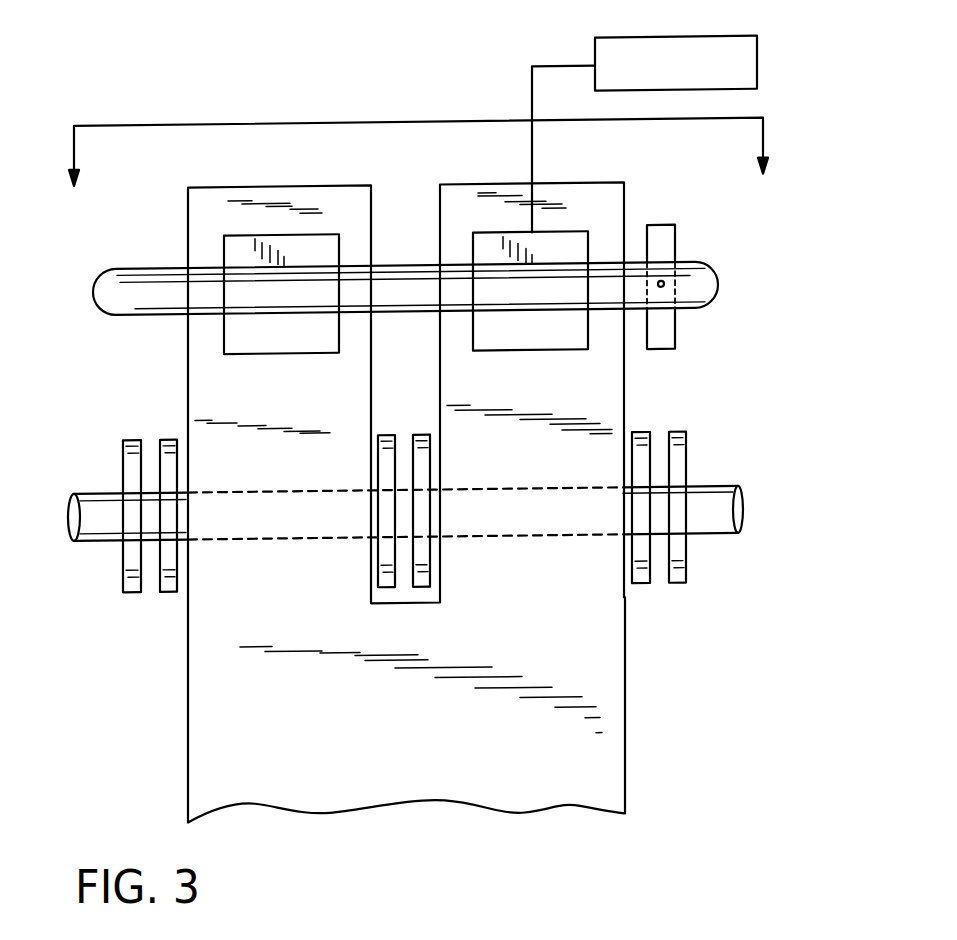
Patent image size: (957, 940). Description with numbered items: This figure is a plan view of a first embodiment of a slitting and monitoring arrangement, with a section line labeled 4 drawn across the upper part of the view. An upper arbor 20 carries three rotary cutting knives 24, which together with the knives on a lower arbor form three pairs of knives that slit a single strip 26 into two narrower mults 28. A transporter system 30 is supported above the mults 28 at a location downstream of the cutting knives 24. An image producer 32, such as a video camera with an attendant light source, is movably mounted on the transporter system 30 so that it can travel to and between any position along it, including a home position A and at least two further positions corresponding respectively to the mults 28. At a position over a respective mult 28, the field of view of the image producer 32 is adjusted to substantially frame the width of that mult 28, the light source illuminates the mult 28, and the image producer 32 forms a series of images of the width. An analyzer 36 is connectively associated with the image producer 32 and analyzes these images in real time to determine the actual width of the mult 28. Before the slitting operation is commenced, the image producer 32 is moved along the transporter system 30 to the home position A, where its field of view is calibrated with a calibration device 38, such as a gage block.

The upper arbor 20 is at (708, 512).
The rotary cutting knives 24 is at (423, 436).
The strip 26 is at (370, 793).
The mults 28 is at (316, 203).
The transporter system 30 is at (118, 300).
The image producer 32 is at (244, 352).
The analyzer 36 is at (757, 40).
The calibration device 38 is at (665, 240).
The section line 4- 4 is at (419, 154).
The home position A is at (666, 286).